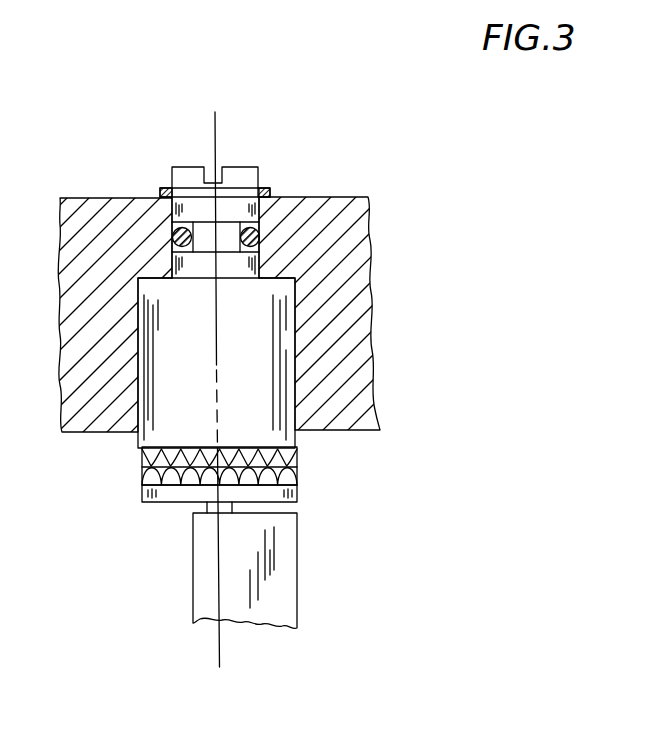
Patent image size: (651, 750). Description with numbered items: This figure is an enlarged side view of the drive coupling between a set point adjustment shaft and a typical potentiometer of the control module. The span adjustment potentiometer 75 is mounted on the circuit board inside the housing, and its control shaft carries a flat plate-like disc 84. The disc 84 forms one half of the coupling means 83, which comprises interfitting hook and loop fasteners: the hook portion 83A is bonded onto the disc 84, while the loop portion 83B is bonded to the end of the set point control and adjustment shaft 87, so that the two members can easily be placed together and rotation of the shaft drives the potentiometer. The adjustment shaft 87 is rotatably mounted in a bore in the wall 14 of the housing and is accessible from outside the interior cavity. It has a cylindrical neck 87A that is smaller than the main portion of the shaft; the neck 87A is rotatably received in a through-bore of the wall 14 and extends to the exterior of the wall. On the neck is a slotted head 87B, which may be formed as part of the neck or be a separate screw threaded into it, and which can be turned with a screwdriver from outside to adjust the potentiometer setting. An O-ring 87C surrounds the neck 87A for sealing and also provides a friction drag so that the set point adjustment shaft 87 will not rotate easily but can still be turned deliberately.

The wall 14 is at (362, 364).
The span adjustment potentiometer 75 is at (297, 578).
The coupling means 83 is at (269, 469).
The hook portion 83A is at (300, 473).
The loop portion 83B is at (142, 460).
The disc 84 is at (165, 495).
The set point adjustment shaft 87 is at (280, 308).
The cylindrical neck 87A is at (188, 213).
The slotted head 87B is at (245, 166).
The O-ring 87C is at (290, 196).